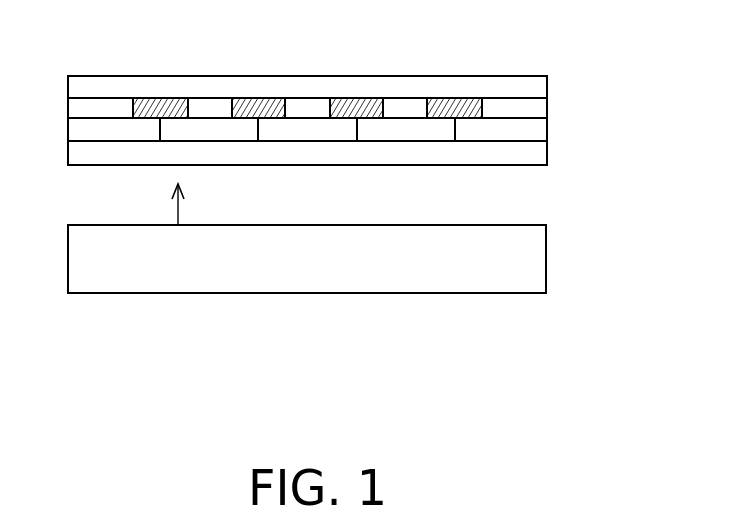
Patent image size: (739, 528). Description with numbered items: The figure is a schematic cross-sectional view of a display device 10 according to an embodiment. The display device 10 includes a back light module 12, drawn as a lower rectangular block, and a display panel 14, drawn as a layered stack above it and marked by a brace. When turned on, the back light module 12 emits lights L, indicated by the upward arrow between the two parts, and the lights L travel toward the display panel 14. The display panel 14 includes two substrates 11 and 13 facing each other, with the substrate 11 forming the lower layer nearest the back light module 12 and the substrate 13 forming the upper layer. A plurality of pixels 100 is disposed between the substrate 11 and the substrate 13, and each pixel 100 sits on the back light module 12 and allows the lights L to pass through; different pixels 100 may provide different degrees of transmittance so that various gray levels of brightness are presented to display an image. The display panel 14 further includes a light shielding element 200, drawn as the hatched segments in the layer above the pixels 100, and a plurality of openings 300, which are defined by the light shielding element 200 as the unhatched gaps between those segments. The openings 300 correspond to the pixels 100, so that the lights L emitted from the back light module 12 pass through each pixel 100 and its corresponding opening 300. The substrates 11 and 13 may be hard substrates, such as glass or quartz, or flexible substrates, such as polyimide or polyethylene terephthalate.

The display device 10 is at (625, 378).
The substrate 11 is at (530, 157).
The back light module 12 is at (546, 256).
The substrate 13 is at (523, 88).
The display panel 14 is at (61, 77).
The pixel 100 is at (408, 130).
The light shielding element 200 is at (367, 102).
The opening 300 is at (328, 63).
The lights L is at (179, 210).